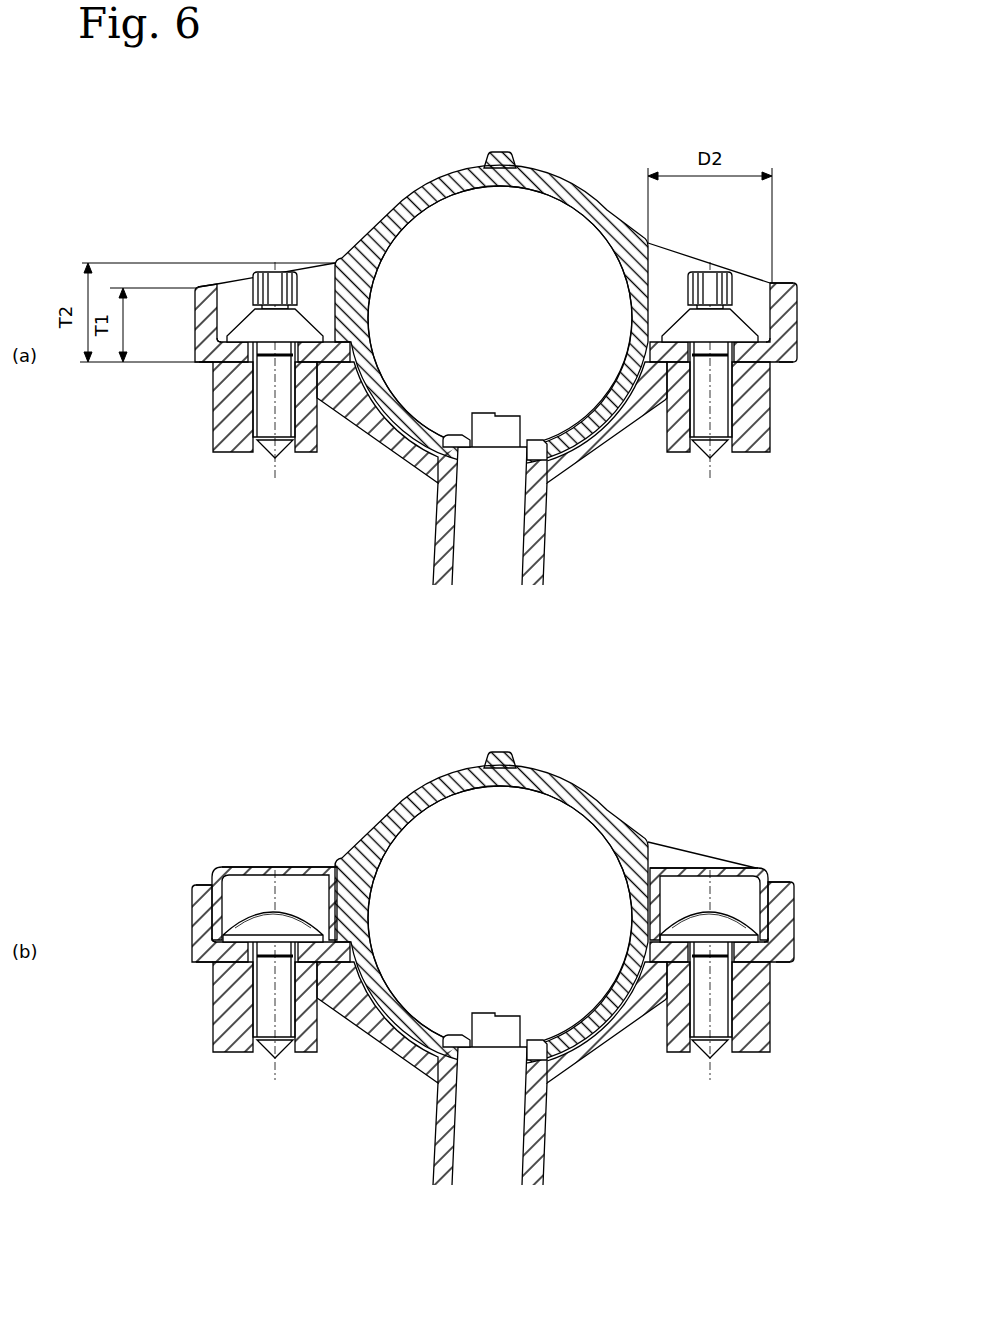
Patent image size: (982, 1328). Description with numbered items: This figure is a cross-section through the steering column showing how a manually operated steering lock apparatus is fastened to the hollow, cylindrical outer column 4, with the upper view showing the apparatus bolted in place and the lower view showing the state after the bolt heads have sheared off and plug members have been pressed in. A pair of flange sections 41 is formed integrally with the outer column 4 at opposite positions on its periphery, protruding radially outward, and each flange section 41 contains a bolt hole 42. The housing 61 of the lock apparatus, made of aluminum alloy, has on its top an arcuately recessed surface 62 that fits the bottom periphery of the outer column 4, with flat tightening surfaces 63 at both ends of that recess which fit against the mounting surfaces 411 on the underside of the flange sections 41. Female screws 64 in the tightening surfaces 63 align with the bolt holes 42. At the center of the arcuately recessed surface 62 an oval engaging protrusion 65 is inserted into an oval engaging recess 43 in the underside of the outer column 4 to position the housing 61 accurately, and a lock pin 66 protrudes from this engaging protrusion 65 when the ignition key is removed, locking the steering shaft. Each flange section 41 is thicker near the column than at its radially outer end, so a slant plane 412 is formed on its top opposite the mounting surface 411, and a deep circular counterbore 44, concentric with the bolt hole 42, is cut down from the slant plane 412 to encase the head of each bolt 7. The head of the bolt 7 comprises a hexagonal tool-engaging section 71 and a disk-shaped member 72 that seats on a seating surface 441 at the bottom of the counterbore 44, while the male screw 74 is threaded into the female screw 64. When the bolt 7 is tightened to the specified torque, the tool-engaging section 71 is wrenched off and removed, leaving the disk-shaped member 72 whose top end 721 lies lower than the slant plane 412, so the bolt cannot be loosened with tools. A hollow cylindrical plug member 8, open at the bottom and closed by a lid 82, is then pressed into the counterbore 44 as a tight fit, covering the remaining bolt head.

The outer column 4 is at (497, 158).
The flange section 41 is at (204, 318).
The mounting surface 411 is at (207, 365).
The slant plane 412 is at (308, 265).
The bolt hole 42 is at (228, 351).
The engaging recess 43 is at (452, 435).
The counterbore 44 is at (223, 286).
The seating surface 441 is at (223, 337).
The housing 61 is at (537, 541).
The arcuately recessed surface 62 is at (404, 408).
The tightening surface 63 is at (350, 354).
The female screw 64 is at (257, 405).
The engaging protrusion 65 is at (535, 440).
The lock pin 66 is at (497, 415).
The bolt 7 is at (272, 264).
The tool-engaging section 71 is at (297, 290).
The disk-shaped member 72 is at (305, 326).
The top end 721 is at (282, 908).
The male screw 74 is at (250, 436).
The plug member 8 is at (261, 862).
The lid 82 is at (294, 866).